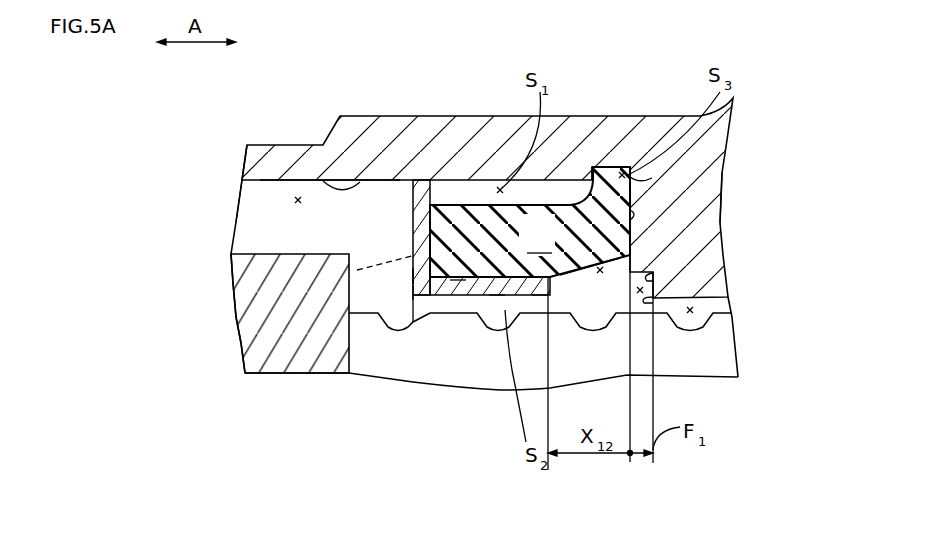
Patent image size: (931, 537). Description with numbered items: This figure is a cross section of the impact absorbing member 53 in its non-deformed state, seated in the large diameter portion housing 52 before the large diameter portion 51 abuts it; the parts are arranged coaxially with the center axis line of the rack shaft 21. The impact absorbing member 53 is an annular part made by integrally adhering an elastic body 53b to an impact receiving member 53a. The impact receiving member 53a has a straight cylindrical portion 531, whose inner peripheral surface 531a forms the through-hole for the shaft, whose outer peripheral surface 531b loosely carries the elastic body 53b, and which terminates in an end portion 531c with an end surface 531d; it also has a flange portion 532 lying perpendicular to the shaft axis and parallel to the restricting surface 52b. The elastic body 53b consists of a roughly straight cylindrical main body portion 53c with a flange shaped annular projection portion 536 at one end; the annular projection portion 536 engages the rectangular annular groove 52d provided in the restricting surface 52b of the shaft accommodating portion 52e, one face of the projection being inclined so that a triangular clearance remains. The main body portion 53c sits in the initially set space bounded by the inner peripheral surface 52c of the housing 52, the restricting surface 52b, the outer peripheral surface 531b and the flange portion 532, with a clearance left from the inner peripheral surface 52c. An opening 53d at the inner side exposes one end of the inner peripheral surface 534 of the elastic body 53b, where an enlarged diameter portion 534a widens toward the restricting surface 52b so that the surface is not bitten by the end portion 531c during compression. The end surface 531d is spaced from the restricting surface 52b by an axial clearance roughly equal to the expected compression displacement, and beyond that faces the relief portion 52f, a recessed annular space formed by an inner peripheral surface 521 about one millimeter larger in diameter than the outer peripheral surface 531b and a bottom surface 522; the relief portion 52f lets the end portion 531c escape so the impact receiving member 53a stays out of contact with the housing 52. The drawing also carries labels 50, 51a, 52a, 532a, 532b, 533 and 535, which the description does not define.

The rack shaft 21 is at (705, 360).
The sealing structure 50 is at (331, 47).
The large diameter portion 51 is at (230, 221).
The inclined face of first member 51a is at (237, 226).
The large diameter portion housing 52 is at (548, 145).
The inner face of housing member 52a is at (352, 272).
The restricting surface 52b is at (723, 185).
The inner peripheral surface of the large diameter portion housing 52c is at (296, 198).
The annular groove 52d is at (583, 176).
The shaft accommodating portion 52e is at (694, 314).
The relief portion 52f is at (653, 277).
The inner peripheral surface 521 is at (645, 288).
The bottom surface 522 is at (653, 300).
The impact absorbing member 53 is at (491, 158).
The impact receiving member 53a is at (413, 292).
The elastic body 53b is at (443, 296).
The main body portion 53c is at (421, 381).
The opening 53d is at (607, 265).
The cylindrical portion 531 is at (430, 296).
The inner peripheral surface of the cylindrical portion 531a is at (413, 305).
The outer peripheral surface of the cylindrical portion 531b is at (498, 296).
The end portion of the cylindrical portion 531c is at (513, 270).
The end surface of the cylindrical portion 531d is at (540, 296).
The flange portion 532 is at (413, 222).
The outer face of wall portion 532a is at (353, 272).
The inner face of wall portion 532b is at (413, 276).
The inner wall surface of seal member 533 is at (338, 188).
The inner peripheral surface of the elastic body 534 is at (458, 280).
The enlarged diameter portion 534a is at (632, 210).
The upper face of seal member 535 is at (462, 203).
The annular projection portion 536 is at (622, 166).